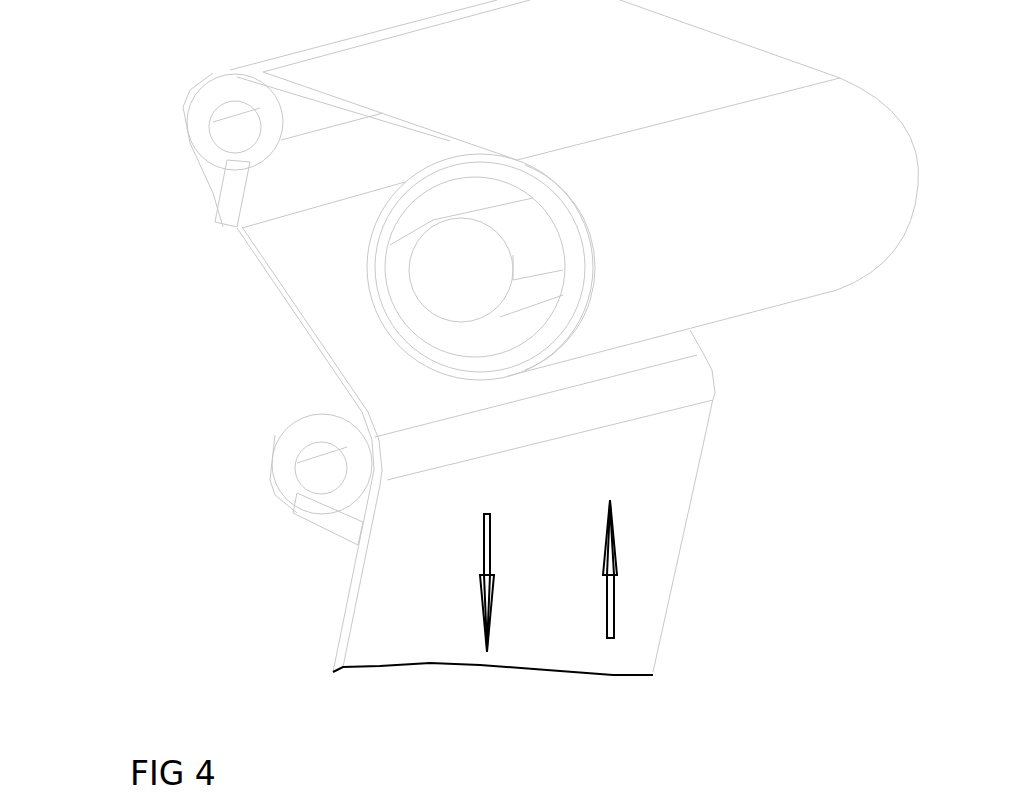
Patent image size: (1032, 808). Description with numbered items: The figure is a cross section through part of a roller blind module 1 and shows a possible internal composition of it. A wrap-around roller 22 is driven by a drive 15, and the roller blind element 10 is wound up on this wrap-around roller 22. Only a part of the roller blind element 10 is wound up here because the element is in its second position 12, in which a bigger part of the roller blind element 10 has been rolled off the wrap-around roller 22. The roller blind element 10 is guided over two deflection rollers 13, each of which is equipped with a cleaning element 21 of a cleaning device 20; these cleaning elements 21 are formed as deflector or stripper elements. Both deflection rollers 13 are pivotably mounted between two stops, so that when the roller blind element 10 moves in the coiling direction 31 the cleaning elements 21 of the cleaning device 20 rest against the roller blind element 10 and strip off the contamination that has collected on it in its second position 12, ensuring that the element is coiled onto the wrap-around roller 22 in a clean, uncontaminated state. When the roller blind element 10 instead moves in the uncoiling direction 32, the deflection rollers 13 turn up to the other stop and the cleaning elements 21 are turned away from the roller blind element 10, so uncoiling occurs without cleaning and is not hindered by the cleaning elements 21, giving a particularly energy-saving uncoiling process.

The roller blind module 1 is at (125, 408).
The roller blind element 10 is at (535, 337).
The second position 12 is at (625, 88).
The deflection rollers 13 is at (198, 118).
The drive 15 is at (445, 277).
The cleaning device 20 is at (227, 383).
The cleaning element 21 is at (227, 203).
The wrap-around roller 22 is at (373, 252).
The coiling direction 31 is at (628, 582).
The uncoiling direction 32 is at (487, 575).